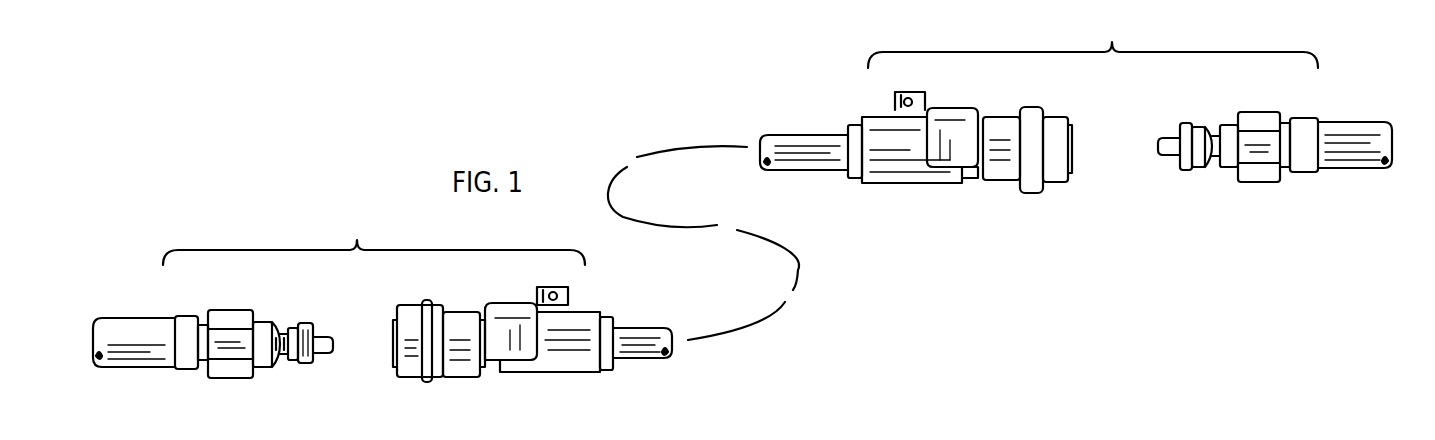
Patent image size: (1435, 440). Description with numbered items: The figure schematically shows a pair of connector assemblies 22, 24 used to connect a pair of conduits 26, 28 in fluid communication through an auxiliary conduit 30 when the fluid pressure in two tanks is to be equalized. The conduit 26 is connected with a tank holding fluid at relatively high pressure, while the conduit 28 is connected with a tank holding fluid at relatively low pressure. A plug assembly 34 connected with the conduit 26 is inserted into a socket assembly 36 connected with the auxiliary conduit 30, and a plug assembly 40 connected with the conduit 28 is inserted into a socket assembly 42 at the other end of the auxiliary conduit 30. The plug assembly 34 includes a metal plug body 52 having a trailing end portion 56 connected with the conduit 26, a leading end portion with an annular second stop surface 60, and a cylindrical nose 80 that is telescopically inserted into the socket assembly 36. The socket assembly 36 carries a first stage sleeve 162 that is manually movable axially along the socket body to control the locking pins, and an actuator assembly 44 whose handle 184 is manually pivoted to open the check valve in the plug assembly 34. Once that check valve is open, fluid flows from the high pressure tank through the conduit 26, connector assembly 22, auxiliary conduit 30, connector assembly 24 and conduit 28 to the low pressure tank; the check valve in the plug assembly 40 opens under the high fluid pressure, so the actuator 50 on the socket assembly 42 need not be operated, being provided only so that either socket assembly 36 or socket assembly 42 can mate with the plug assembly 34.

The connector assembly 22 is at (374, 242).
The connector assembly 24 is at (1093, 43).
The conduit 26 is at (143, 340).
The conduit 28 is at (1343, 145).
The auxiliary conduit 30 is at (637, 345).
The plug assembly 34 is at (259, 348).
The socket assembly 36 is at (505, 341).
The plug assembly 40 is at (1268, 190).
The socket assembly 42 is at (960, 158).
The actuator assembly 44 is at (553, 319).
The actuator 50 is at (946, 110).
The plug body 52 is at (228, 320).
The trailing end portion 56 is at (300, 321).
The second stop surface 60 is at (284, 326).
The cylindrical nose 80 is at (320, 357).
The first stage sleeve 162 is at (413, 304).
The handle 184 is at (513, 340).